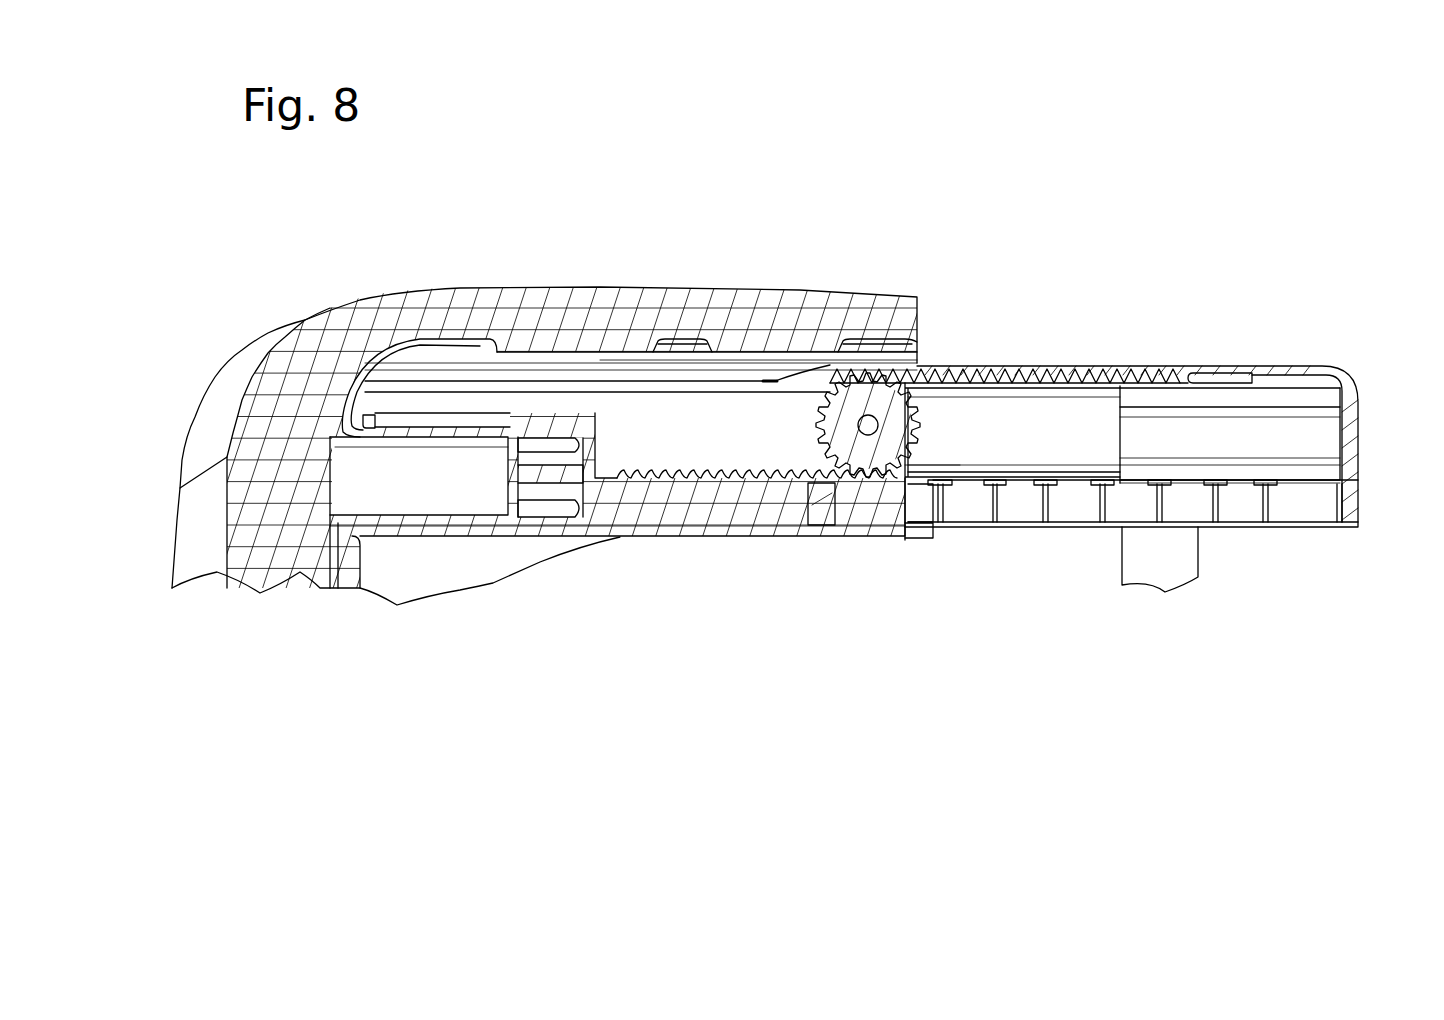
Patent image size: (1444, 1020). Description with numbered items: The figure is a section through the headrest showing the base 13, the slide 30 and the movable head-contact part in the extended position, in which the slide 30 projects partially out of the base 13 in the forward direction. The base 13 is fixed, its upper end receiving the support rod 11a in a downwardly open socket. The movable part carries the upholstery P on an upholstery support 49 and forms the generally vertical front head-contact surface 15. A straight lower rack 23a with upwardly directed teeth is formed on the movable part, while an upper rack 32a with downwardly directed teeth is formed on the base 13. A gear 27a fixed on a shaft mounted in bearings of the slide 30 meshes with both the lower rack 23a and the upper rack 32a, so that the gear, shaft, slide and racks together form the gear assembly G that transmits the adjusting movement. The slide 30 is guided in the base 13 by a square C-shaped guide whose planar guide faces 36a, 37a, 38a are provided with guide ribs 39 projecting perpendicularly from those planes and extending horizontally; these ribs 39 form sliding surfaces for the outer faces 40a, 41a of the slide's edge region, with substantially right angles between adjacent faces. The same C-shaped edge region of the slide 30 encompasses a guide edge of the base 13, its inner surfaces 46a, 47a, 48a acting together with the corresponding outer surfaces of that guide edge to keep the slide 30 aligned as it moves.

The front head-contact surface 15 is at (223, 497).
The upholstery P is at (683, 297).
The upholstery support 49 is at (430, 340).
The lower rack 23a is at (690, 458).
The gear assembly G is at (873, 370).
The gear 27a is at (815, 432).
The outer face 40a is at (1084, 378).
The base 13 is at (1297, 368).
The upper rack 32a is at (1118, 366).
The guide ribs 39 is at (1207, 376).
The slide 30 is at (950, 425).
The inner surface 46a is at (1032, 400).
The inner surface 48a is at (1037, 458).
The guide face 37a is at (1313, 440).
The guide face 36a is at (1250, 392).
The inner surface 47a is at (990, 443).
The outer face 41a is at (1087, 487).
The guide face 38a is at (1295, 476).
The support rod 11a is at (1157, 573).